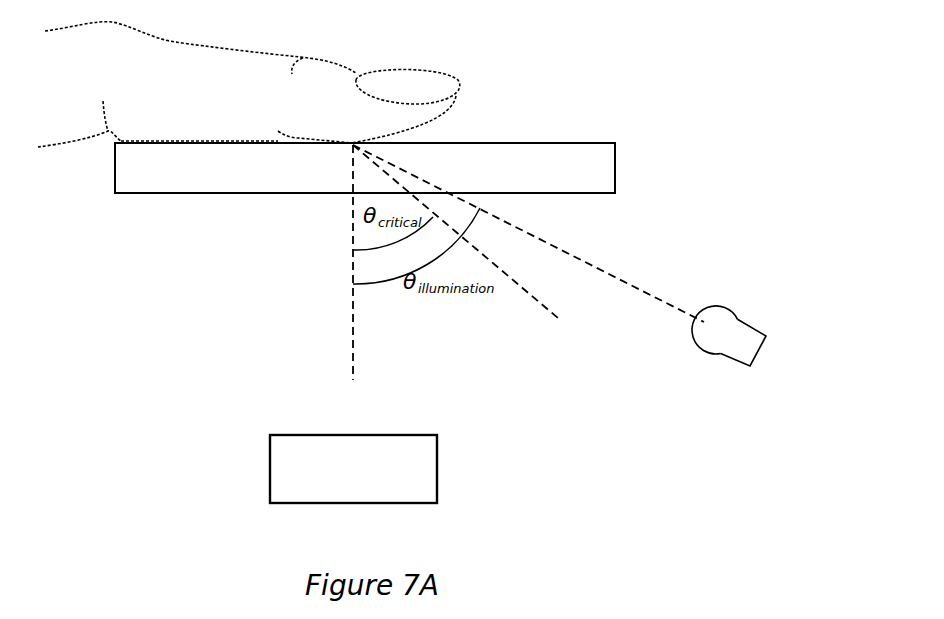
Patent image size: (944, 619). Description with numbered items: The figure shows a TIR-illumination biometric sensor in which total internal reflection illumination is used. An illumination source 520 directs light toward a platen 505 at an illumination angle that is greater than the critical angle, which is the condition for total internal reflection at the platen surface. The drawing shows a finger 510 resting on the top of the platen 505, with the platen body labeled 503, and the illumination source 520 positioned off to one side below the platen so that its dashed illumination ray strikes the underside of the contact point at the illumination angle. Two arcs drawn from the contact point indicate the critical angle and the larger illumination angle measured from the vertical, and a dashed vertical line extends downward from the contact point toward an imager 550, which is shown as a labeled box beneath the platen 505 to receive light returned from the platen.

The finger 510 is at (204, 110).
The platen 505 is at (377, 132).
The platen 503 is at (529, 178).
The illumination source 520 is at (748, 337).
The imager 550 is at (331, 472).